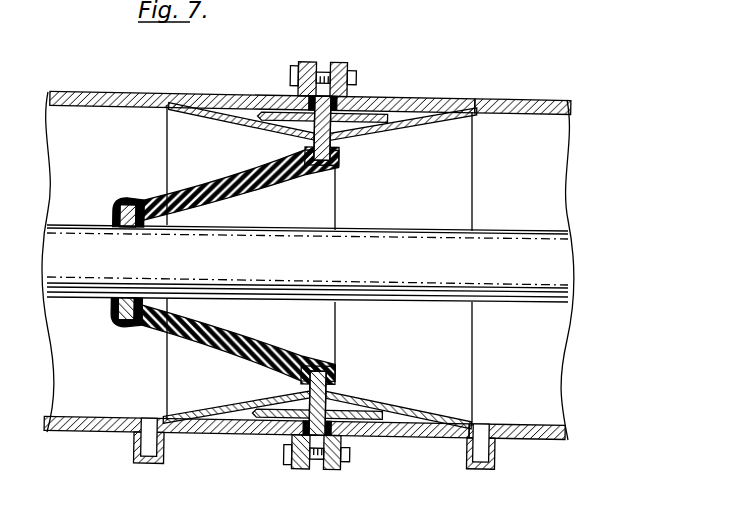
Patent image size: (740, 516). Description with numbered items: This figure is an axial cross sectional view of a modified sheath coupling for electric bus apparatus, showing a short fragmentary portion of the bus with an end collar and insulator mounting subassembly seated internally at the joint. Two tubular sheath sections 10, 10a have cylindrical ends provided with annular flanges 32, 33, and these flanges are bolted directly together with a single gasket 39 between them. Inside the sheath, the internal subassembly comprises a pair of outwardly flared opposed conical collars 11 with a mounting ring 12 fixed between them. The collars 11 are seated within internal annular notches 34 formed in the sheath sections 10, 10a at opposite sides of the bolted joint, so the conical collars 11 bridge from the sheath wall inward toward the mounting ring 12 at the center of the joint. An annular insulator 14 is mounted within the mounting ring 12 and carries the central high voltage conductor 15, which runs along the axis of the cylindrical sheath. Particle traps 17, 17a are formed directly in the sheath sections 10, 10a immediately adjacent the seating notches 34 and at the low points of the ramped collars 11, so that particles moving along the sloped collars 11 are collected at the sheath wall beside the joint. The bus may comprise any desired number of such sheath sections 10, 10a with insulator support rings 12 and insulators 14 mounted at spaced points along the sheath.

The tubular sheath section 10 is at (107, 96).
The tubular sheath section 10a is at (537, 106).
The conical collar 11 is at (237, 122).
The mounting ring 12 is at (336, 156).
The annular insulator 14 is at (153, 200).
The high voltage conductor 15 is at (370, 243).
The particle trap 17 is at (139, 451).
The particle trap 17a is at (498, 459).
The annular flange 32 is at (304, 64).
The annular flange 33 is at (334, 64).
The internal annular notch 34 is at (448, 105).
The gasket 39 is at (332, 99).